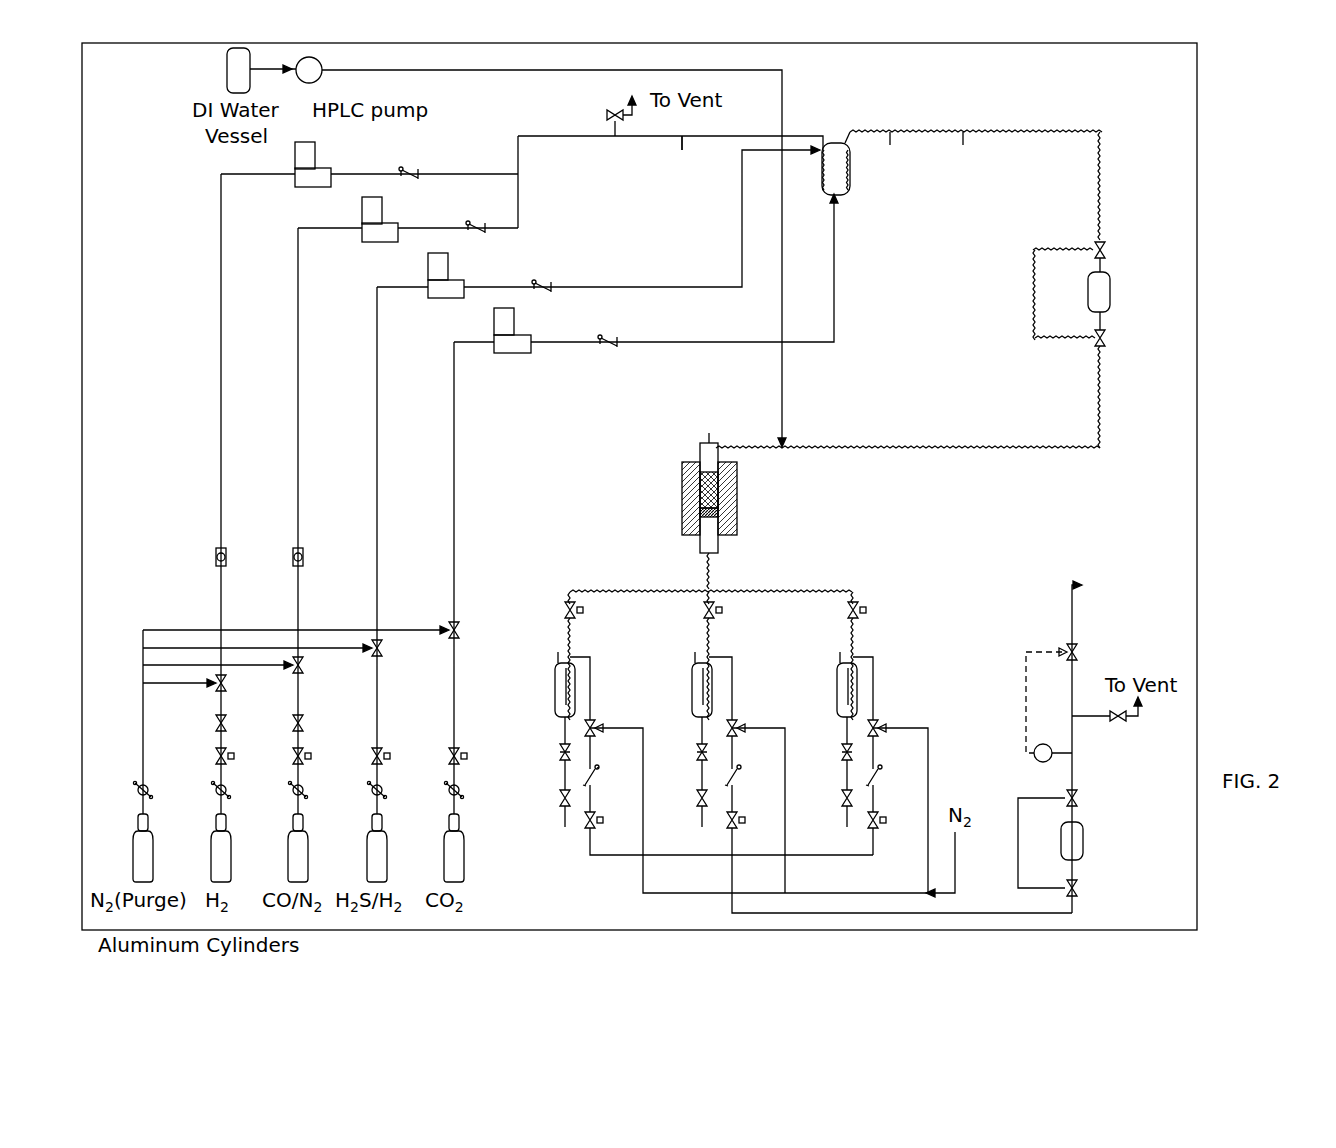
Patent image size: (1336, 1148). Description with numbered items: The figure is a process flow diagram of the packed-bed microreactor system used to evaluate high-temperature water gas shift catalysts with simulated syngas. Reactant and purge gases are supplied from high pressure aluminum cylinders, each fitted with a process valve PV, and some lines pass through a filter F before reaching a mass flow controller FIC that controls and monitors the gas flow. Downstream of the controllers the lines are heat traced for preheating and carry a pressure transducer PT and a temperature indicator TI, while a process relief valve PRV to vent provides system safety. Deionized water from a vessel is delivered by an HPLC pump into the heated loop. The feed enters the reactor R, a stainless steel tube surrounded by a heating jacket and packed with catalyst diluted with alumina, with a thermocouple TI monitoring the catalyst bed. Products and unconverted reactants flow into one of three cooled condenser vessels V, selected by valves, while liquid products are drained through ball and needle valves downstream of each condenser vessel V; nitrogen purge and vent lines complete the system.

The process valve PV is at (617, 484).
The mass flow controller FIC is at (413, 263).
The condenser vessel V is at (833, 501).
The pressure transducer PT is at (926, 154).
The temperature indicator TI is at (692, 289).
The reactor R is at (722, 498).
The filter F is at (249, 558).
The process relief valve PRV is at (594, 112).